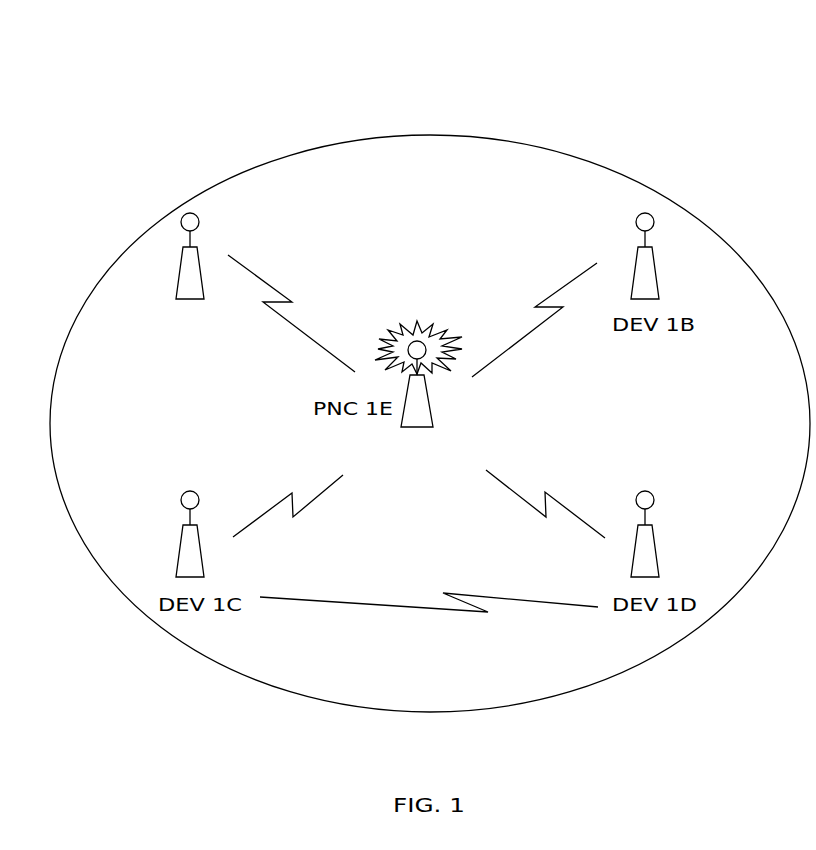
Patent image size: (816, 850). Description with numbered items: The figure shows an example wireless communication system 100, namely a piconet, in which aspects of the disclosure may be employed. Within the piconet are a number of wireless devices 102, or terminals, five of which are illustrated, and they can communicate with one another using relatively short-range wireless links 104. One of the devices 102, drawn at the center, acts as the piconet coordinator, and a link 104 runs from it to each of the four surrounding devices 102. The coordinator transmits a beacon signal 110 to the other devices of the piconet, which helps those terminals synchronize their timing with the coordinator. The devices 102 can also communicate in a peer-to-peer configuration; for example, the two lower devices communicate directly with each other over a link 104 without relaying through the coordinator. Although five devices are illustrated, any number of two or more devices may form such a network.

The wireless communication system 100 is at (604, 66).
The wireless device 102 is at (181, 274).
The wireless link 104 is at (372, 606).
The beacon signal 110 is at (414, 272).